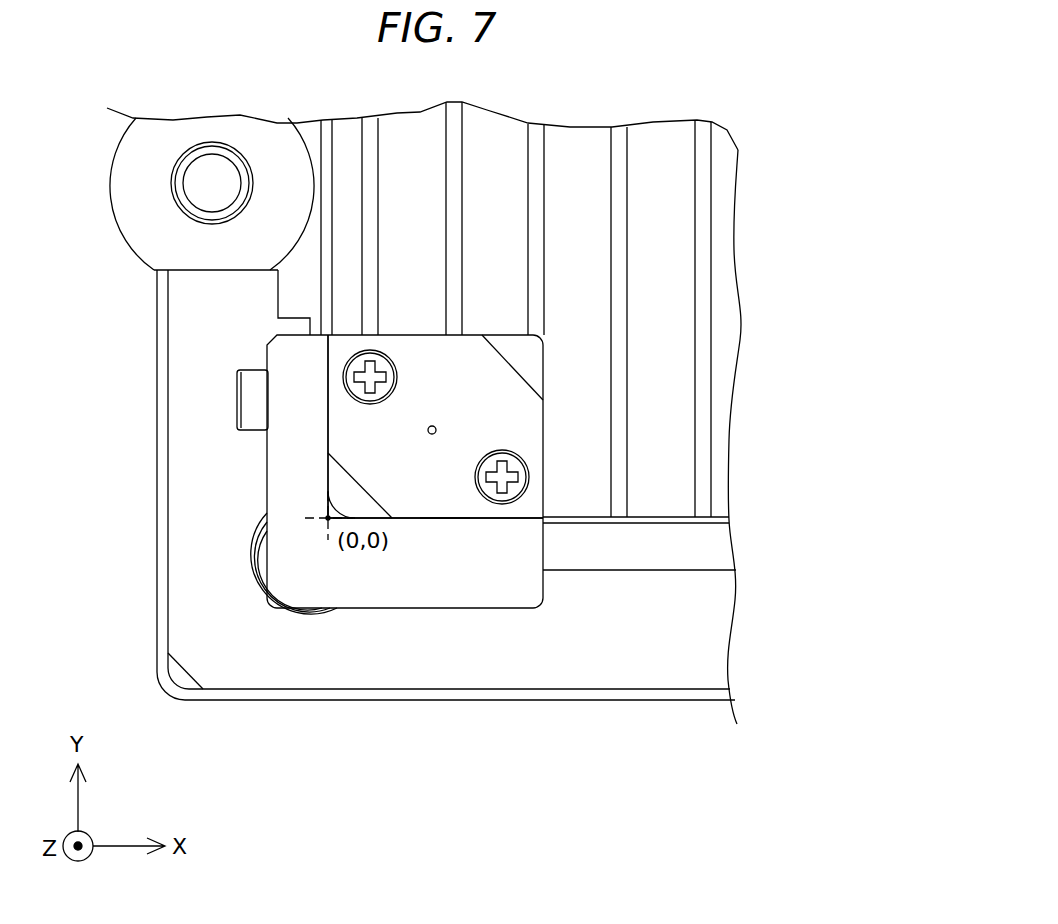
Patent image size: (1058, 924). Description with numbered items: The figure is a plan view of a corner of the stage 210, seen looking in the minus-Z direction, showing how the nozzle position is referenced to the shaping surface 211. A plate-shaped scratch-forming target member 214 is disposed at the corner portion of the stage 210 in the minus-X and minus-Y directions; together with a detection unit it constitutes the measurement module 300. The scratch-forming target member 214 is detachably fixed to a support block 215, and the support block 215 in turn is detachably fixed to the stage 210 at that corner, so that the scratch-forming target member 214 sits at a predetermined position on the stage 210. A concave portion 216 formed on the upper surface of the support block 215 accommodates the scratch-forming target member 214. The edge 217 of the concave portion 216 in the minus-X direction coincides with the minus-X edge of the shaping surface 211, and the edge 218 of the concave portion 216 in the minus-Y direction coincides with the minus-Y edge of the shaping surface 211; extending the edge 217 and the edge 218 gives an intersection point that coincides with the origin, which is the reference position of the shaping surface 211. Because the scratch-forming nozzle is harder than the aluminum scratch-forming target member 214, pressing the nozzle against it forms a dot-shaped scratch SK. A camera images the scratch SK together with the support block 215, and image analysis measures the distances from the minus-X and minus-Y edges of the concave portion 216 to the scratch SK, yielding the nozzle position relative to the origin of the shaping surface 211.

The stage 210 is at (757, 110).
The shaping surface 211 is at (580, 282).
The scratch-forming target member 214 is at (435, 287).
The measurement module 300 is at (433, 375).
The support block 215 is at (358, 575).
The concave portion 216 is at (532, 363).
The edge of the concave portion in the -X direction 217 is at (328, 427).
The edge of the concave portion in the -Y direction 218 is at (430, 518).
The scratch SK is at (437, 428).